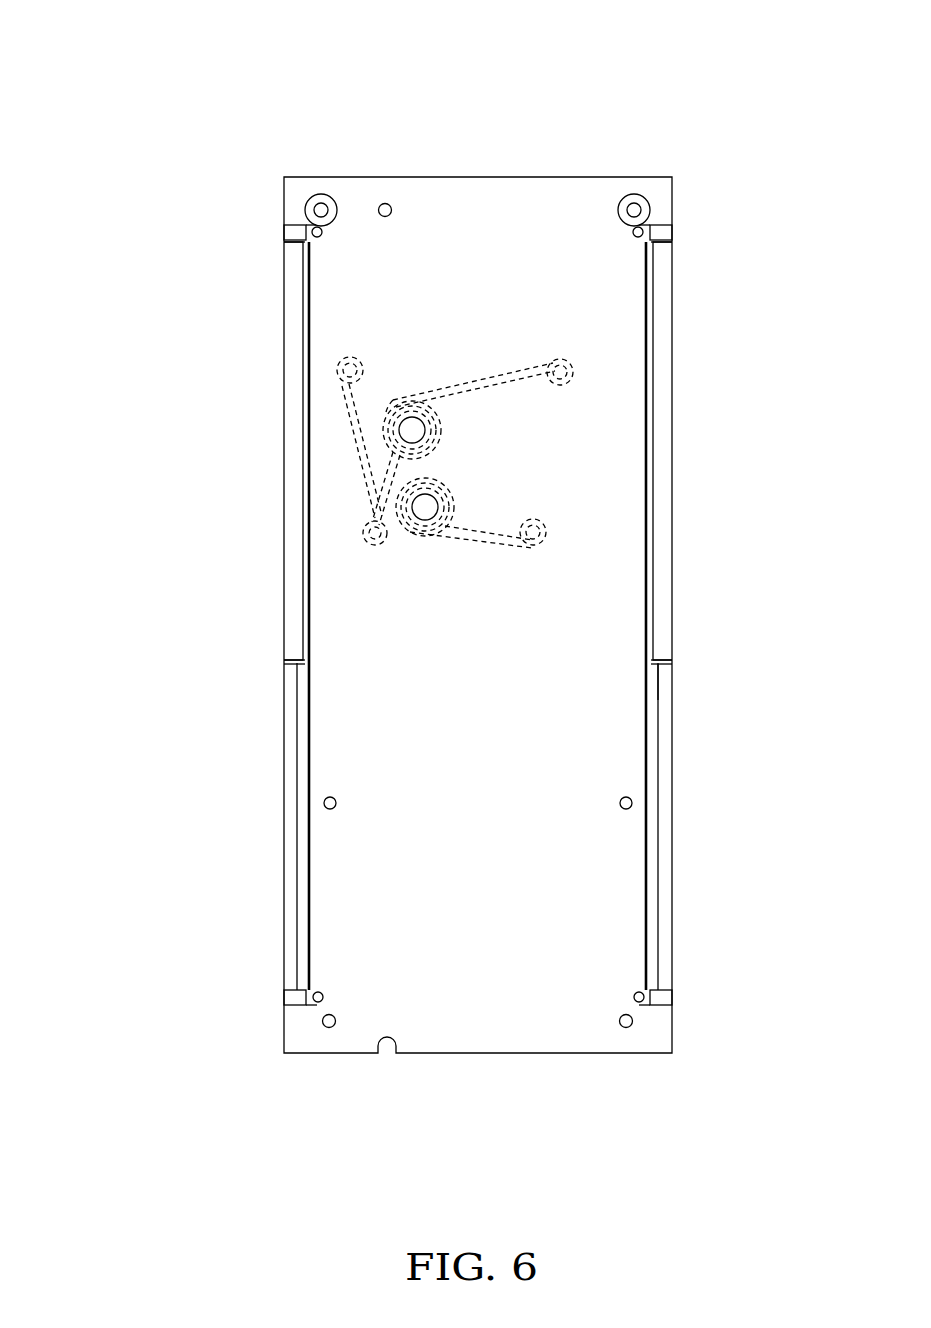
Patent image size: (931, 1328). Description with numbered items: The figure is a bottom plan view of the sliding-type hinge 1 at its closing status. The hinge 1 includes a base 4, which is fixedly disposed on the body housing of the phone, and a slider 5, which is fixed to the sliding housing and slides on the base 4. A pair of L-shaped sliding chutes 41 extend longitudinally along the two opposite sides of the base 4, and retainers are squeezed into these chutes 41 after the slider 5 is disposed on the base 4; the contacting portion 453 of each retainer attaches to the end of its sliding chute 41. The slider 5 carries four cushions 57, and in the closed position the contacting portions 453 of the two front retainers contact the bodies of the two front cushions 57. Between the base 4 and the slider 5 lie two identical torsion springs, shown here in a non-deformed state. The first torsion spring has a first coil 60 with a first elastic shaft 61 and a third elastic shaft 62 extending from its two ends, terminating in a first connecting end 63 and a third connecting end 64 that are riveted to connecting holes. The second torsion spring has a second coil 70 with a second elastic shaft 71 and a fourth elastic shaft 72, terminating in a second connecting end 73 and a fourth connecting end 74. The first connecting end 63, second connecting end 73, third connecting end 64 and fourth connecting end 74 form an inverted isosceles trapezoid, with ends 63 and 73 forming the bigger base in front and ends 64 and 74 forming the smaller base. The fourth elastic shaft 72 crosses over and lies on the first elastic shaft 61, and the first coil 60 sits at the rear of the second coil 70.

The sliding-type hinge 1 is at (116, 42).
The base 4 is at (677, 650).
The slider 5 is at (677, 172).
The sliding chute 41 is at (658, 505).
The cushion 57 is at (282, 229).
The first coil 60 is at (432, 540).
The first elastic shaft 61 is at (355, 433).
The third elastic shaft 62 is at (490, 527).
The first connecting end 63 is at (336, 363).
The third connecting end 64 is at (540, 548).
The second coil 70 is at (402, 396).
The second elastic shaft 71 is at (498, 362).
The fourth elastic shaft 72 is at (372, 500).
The second connecting end 73 is at (567, 365).
The fourth connecting end 74 is at (362, 545).
The contacting portion 453 is at (284, 242).